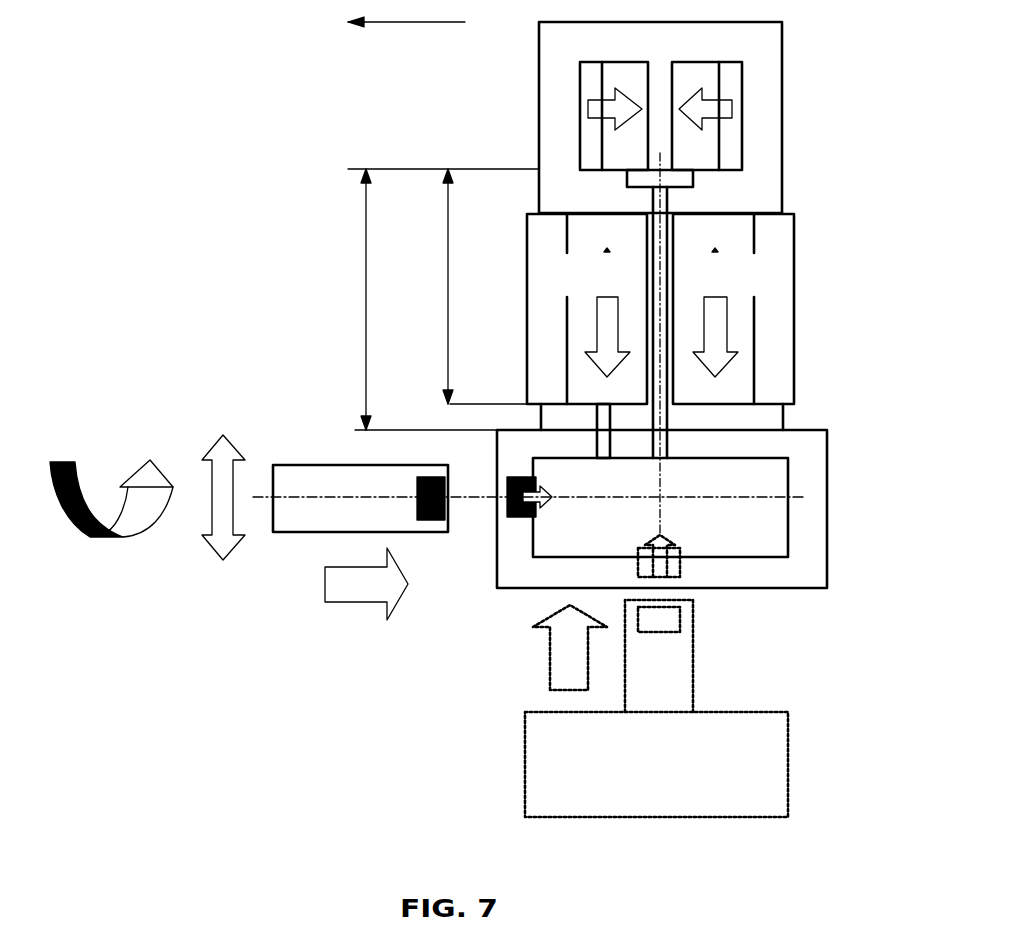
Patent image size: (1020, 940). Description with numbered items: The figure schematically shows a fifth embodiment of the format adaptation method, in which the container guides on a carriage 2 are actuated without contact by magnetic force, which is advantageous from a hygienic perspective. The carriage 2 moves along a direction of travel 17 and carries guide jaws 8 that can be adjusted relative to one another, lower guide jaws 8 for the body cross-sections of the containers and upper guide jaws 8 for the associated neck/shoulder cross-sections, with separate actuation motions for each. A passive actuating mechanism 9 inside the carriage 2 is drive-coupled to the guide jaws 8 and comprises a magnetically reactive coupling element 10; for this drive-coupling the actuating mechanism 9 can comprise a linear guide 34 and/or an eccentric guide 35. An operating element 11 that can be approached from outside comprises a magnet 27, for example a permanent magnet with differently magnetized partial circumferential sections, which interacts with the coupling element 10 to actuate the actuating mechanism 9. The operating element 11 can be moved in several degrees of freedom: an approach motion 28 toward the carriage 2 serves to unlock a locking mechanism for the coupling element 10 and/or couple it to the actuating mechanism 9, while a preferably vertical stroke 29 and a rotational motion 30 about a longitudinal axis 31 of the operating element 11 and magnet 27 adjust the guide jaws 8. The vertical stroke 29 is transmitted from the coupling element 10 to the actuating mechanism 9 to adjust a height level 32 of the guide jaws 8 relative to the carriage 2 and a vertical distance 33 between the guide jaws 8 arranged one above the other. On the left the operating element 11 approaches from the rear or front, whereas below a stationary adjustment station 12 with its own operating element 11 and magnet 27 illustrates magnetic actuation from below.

The carriage 2 is at (783, 40).
The guide jaws 8 is at (738, 136).
The actuating mechanism 9 is at (788, 523).
The coupling element 10 is at (520, 517).
The operating element 11 is at (292, 533).
The adjustment station 12 is at (773, 740).
The direction of travel 17 is at (412, 23).
The magnet 27 is at (427, 520).
The approach motion 28 is at (342, 595).
The vertical stroke 29 is at (217, 518).
The rotational motion 30 is at (73, 520).
The longitudinal axis 31 is at (303, 495).
The height level 32 is at (366, 302).
The vertical distance 33 is at (448, 275).
The linear guide 34 is at (600, 420).
The eccentric guide 35 is at (670, 413).